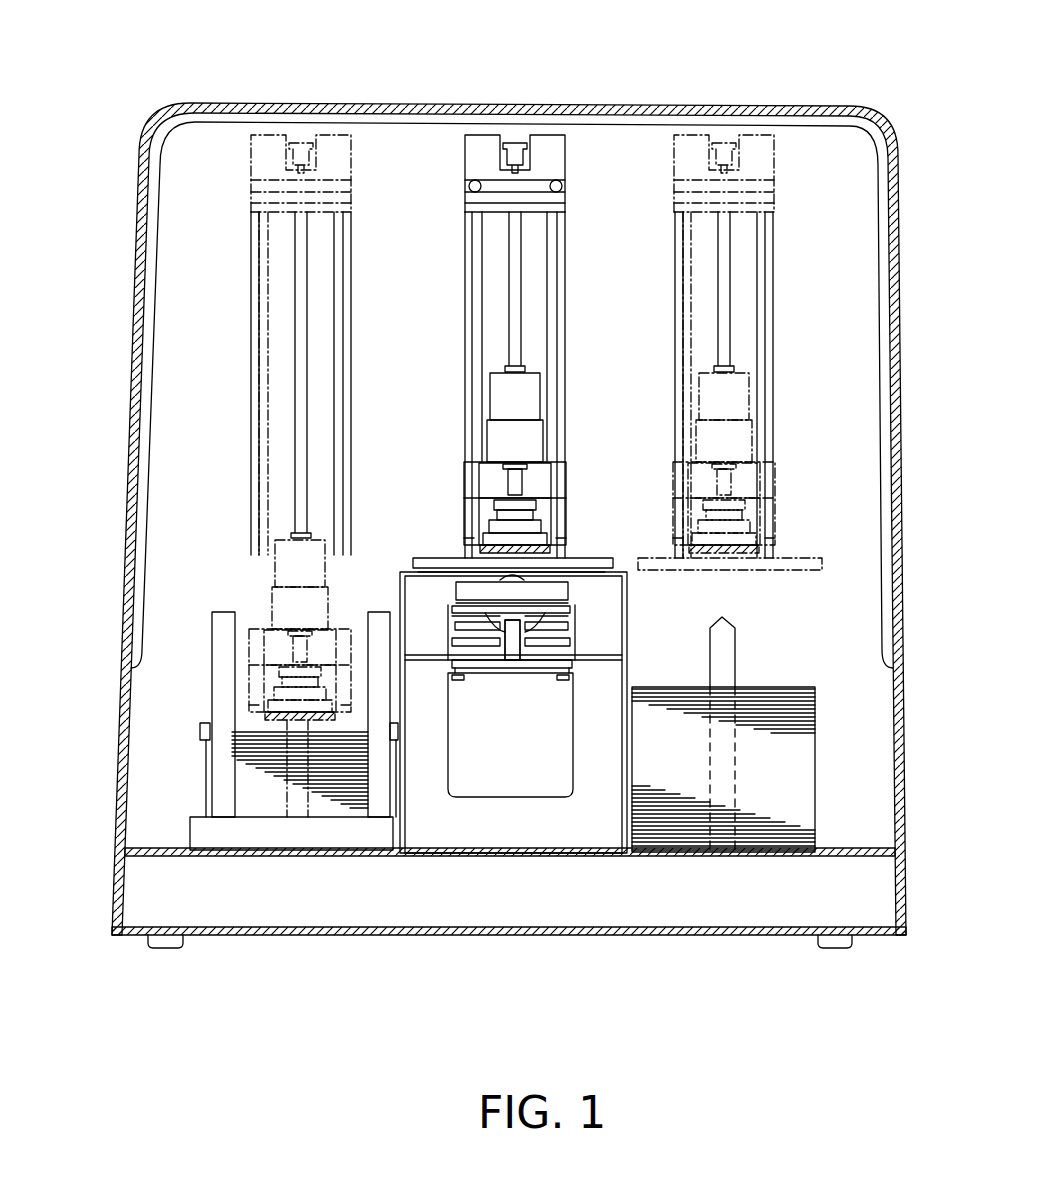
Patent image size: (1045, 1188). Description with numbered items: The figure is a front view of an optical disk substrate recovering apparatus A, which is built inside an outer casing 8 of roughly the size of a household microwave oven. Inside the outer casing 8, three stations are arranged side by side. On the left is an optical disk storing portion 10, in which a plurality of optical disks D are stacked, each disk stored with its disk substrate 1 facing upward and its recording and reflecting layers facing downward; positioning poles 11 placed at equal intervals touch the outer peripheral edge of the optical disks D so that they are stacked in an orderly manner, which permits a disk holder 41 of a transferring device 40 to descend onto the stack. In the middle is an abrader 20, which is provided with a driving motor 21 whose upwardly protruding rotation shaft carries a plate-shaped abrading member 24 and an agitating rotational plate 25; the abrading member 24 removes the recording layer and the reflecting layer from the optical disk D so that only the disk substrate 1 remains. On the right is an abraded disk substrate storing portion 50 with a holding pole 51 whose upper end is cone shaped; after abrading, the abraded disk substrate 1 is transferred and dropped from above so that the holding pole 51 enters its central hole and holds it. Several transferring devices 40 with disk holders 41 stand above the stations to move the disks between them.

The optical disk substrate recovering apparatus A is at (536, 96).
The outer casing 8 is at (898, 178).
The transferring device 40 is at (248, 410).
The disk holder 41 is at (530, 535).
The abrader 20 is at (544, 781).
The driving motor 21 is at (528, 750).
The abrading member 24 is at (568, 592).
The agitating rotational plate 25 is at (586, 637).
The optical disk storing portion 10 is at (232, 773).
The positioning pole 11 is at (210, 620).
The optical disk D is at (257, 800).
The abraded disk substrate storing portion 50 is at (750, 718).
The holding pole 51 is at (727, 655).
The disk substrate 1 is at (795, 777).